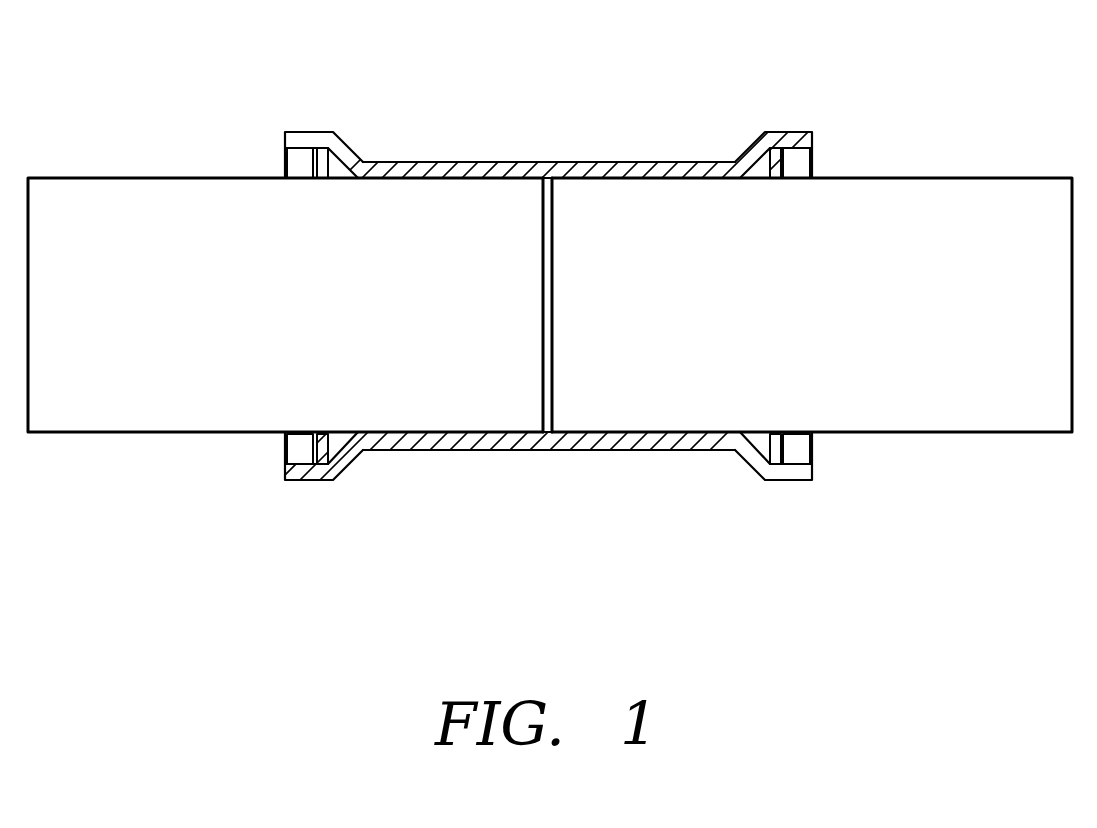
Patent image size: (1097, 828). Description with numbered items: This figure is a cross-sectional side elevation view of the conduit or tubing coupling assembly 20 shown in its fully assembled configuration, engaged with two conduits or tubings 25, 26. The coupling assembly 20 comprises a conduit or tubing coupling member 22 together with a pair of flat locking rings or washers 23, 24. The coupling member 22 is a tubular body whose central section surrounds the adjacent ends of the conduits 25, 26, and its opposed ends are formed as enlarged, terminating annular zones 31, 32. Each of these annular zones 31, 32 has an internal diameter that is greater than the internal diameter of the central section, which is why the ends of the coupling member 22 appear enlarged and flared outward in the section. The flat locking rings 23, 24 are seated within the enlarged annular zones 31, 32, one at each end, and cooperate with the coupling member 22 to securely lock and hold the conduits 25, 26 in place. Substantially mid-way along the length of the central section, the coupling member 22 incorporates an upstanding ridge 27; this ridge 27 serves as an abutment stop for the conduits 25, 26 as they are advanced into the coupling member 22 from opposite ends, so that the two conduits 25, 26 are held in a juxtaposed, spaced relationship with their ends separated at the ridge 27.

The conduit or tubing coupling assembly 20 is at (540, 303).
The conduit or tubing coupling member 22 is at (455, 162).
The flat locking ring 23 is at (283, 445).
The flat locking ring 24 is at (783, 447).
The conduit or tubing 25 is at (240, 316).
The conduit or tubing 26 is at (862, 316).
The upstanding ridge 27 is at (545, 380).
The terminating annular zone 31 is at (307, 483).
The terminating annular zone 32 is at (793, 128).